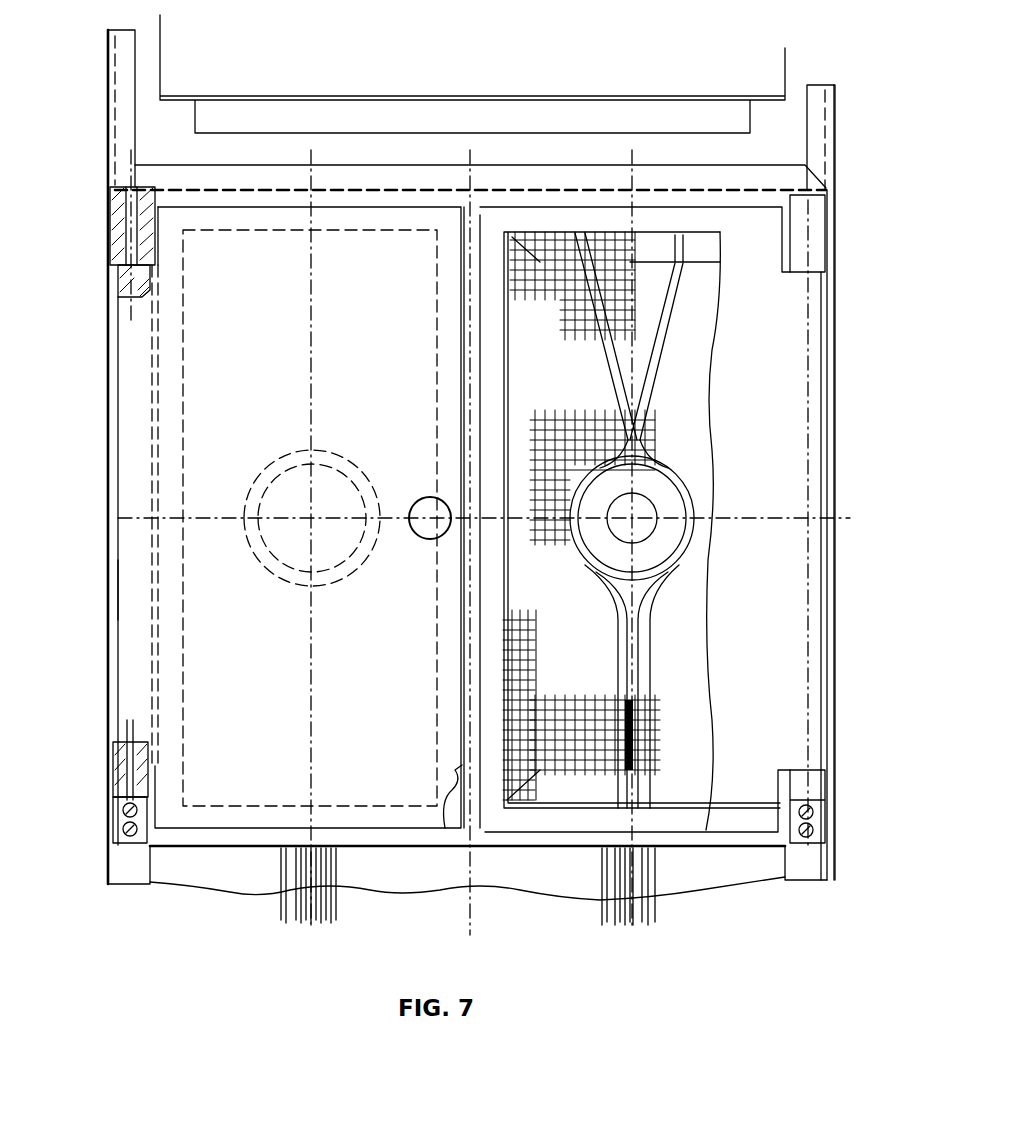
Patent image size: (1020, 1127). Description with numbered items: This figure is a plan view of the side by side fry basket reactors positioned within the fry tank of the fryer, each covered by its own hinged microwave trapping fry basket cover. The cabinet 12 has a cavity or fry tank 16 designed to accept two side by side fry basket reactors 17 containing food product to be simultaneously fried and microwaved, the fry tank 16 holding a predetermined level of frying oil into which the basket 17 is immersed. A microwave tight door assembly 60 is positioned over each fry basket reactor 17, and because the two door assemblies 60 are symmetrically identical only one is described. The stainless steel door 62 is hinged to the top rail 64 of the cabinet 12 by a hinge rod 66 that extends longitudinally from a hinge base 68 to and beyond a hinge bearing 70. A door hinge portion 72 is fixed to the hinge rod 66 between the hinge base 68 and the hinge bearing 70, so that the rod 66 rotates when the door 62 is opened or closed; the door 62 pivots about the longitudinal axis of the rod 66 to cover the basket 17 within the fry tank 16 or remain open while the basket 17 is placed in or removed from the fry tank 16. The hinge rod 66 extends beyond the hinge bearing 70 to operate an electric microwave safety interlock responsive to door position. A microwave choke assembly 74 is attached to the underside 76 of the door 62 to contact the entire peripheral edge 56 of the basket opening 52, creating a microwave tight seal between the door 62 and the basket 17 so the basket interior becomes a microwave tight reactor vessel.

The cabinet 12 is at (110, 120).
The fry tank 16 is at (174, 848).
The fry basket reactor 17 is at (510, 362).
The basket opening 52 is at (205, 394).
The peripheral edge 56 is at (160, 363).
The microwave tight door assembly 60 is at (103, 700).
The stainless steel door 62 is at (196, 413).
The top rail 64 is at (108, 490).
The hinge rod 66 is at (132, 290).
The hinge base 68 is at (118, 786).
The hinge bearing 70 is at (122, 232).
The door hinge portion 72 is at (128, 594).
The microwave choke assembly 74 is at (172, 445).
The underside 76 is at (270, 220).